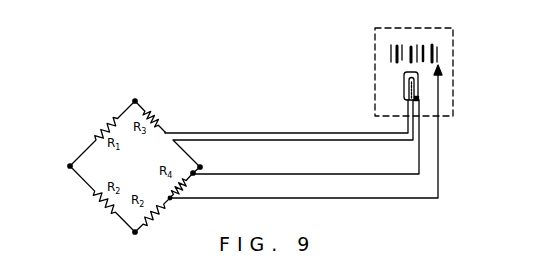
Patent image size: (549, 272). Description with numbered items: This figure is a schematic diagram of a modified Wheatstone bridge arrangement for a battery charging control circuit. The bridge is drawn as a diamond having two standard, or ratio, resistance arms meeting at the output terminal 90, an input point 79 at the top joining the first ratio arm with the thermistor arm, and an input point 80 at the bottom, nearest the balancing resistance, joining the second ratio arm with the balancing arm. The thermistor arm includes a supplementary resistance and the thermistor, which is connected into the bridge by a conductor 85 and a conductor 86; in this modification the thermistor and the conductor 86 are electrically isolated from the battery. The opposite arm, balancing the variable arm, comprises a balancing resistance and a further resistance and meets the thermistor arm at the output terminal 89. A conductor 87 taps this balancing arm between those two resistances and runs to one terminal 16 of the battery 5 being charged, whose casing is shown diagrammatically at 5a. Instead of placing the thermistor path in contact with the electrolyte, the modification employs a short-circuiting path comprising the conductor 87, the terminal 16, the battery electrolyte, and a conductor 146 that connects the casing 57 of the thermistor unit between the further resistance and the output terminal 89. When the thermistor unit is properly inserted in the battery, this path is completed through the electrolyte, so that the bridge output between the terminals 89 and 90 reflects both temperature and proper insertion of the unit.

The battery 5 is at (417, 45).
The casing of battery 5a is at (453, 47).
The battery terminal 16 is at (441, 72).
The casing 57 is at (405, 78).
The input point of the bridge 79 is at (135, 101).
The input point of the bridge 80 is at (135, 232).
The conductor 85 is at (257, 133).
The conductor 86 is at (257, 140).
The conductor 87 is at (318, 198).
The output terminal of the bridge 89 is at (200, 167).
The output terminal of the bridge 90 is at (70, 166).
The conductor 146 is at (320, 174).